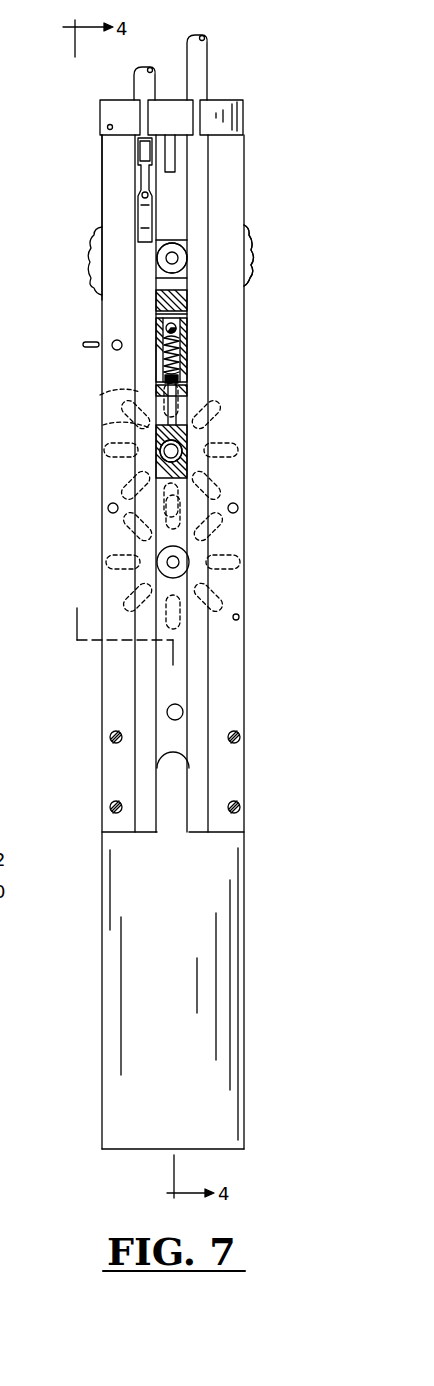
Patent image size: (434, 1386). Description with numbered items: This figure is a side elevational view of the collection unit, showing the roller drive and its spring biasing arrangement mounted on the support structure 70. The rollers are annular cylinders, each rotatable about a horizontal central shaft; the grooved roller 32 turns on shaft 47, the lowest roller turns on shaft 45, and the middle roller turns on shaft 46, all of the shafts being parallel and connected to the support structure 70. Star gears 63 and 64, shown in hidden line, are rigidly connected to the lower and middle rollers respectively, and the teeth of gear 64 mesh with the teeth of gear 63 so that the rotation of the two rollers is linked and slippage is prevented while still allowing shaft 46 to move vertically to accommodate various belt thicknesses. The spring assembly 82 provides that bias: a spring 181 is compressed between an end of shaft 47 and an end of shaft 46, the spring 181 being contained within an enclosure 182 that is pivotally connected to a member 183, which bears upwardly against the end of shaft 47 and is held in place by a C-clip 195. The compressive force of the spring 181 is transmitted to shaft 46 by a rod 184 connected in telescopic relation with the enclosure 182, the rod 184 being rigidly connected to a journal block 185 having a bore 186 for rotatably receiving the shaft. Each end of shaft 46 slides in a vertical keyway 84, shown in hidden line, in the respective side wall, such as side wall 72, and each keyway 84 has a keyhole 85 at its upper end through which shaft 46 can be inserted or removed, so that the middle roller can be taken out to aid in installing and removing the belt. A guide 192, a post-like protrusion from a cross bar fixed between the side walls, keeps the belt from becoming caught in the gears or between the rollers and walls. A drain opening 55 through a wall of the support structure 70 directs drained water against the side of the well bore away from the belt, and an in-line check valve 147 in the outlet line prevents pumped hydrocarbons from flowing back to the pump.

The roller 32 is at (90, 250).
The in-line check valve 147 is at (141, 184).
The C-clip 195 is at (174, 241).
The shaft 47 is at (165, 258).
The support structure 70 is at (232, 248).
The side wall 72 is at (127, 293).
The member 183 is at (200, 292).
The enclosure 182 is at (166, 327).
The spring assembly 82 is at (210, 321).
The spring 181 is at (183, 351).
The guide 192 is at (90, 348).
The rod 184 is at (132, 380).
The keyhole 85 is at (188, 389).
The keyway 84 is at (126, 421).
The star gear 64 is at (245, 411).
The shaft 46 is at (162, 452).
The bore 186 is at (183, 452).
The journal block 185 is at (190, 472).
The star gear 63 is at (246, 548).
The shaft 45 is at (173, 569).
The drain opening 55 is at (176, 720).